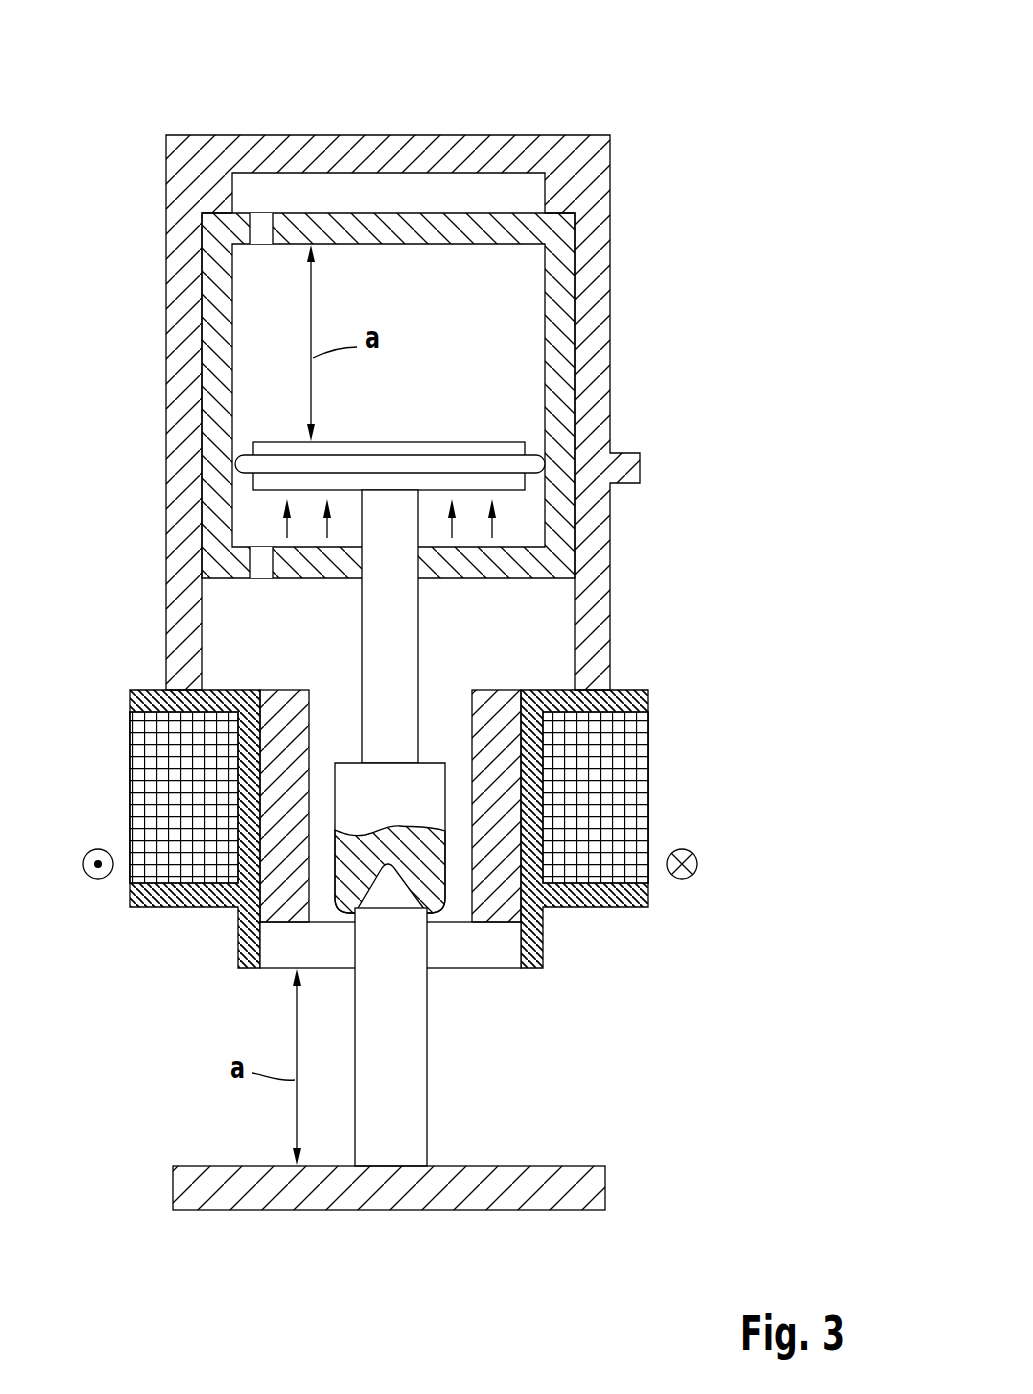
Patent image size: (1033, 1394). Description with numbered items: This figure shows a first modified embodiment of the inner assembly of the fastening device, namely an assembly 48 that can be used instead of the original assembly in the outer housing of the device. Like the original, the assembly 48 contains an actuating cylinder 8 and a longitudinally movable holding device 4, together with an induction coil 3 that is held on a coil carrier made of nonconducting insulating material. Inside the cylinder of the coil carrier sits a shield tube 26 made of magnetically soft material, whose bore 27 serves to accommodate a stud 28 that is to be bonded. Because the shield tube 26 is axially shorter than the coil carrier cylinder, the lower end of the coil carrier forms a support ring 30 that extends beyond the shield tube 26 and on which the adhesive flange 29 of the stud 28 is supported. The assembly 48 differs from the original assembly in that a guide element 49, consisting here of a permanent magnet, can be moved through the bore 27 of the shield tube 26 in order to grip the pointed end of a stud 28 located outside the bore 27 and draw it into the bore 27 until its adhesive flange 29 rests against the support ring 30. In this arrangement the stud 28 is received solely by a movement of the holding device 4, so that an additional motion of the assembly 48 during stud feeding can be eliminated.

The assembly 48 is at (456, 108).
The actuating cylinder 8 is at (565, 333).
The holding device 4 is at (440, 644).
The support ring 30 is at (543, 948).
The induction coil 3 is at (147, 817).
The shield tube 26 is at (273, 753).
The bore 27 is at (335, 713).
The guide element 49 is at (422, 797).
The stud 28 is at (413, 1078).
The adhesive flange 29 is at (590, 1192).